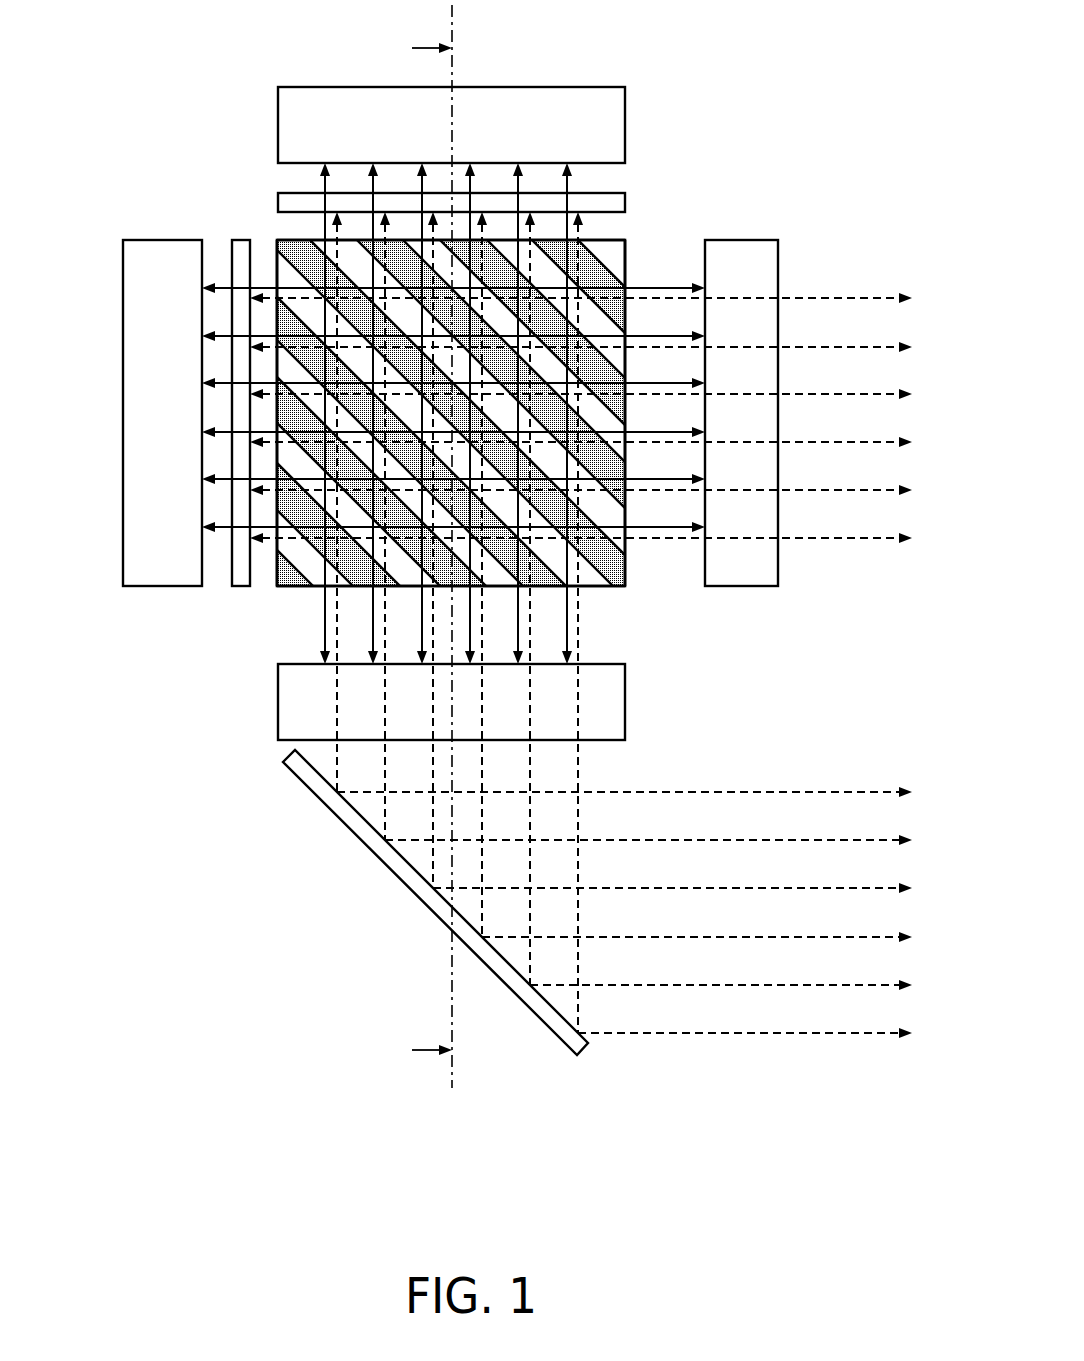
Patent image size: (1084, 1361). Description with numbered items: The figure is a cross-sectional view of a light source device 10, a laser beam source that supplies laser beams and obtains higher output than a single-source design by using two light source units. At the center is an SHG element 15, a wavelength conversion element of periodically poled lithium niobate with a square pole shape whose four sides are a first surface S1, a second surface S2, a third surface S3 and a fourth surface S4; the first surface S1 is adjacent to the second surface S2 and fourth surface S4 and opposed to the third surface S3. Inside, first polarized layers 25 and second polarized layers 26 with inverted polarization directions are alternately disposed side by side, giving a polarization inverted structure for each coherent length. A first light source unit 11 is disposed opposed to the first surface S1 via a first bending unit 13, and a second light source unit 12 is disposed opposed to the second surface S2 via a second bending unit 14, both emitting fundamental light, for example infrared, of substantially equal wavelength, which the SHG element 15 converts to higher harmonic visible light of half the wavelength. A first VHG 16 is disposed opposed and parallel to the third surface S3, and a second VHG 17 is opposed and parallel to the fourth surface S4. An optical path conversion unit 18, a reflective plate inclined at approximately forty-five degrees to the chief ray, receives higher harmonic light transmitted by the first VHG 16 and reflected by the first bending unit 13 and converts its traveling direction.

The light source device 10 is at (186, 66).
The first light source unit 11 is at (592, 92).
The second light source unit 12 is at (133, 263).
The first bending unit 13 is at (615, 198).
The second bending unit 14 is at (242, 246).
The SHG element 15 is at (519, 425).
The first VHG 16 is at (618, 712).
The second VHG 17 is at (772, 265).
The optical path conversion unit 18 is at (559, 1034).
The first polarized layers 25 is at (621, 560).
The second polarized layers 26 is at (622, 517).
The first surface S1 is at (287, 243).
The second surface S2 is at (279, 560).
The third surface S3 is at (592, 588).
The fourth surface S4 is at (627, 267).